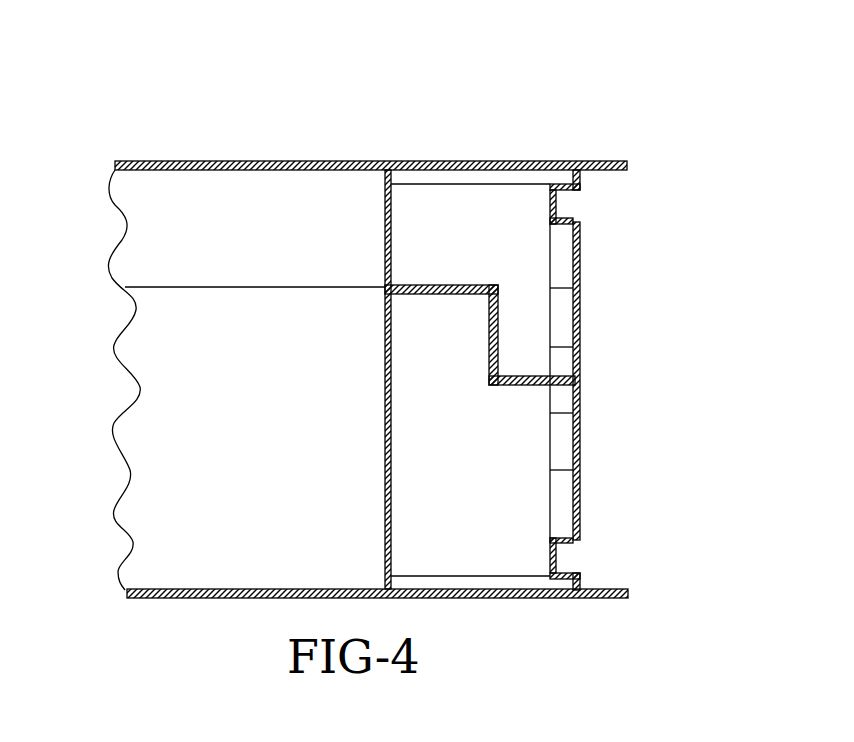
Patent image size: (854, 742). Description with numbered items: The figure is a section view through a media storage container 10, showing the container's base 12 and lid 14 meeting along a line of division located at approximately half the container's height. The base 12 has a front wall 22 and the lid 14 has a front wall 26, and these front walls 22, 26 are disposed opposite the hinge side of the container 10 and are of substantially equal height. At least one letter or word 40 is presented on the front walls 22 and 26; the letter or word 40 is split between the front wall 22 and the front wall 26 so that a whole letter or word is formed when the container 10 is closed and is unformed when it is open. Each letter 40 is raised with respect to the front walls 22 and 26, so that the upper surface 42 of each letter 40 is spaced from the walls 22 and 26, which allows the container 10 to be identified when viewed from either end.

The media storage container 10 is at (524, 136).
The base 12 is at (197, 598).
The lid 14 is at (185, 162).
The front wall 22 is at (558, 554).
The front wall 26 is at (557, 207).
The letter or word 40 is at (588, 337).
The upper surface 42 is at (578, 273).